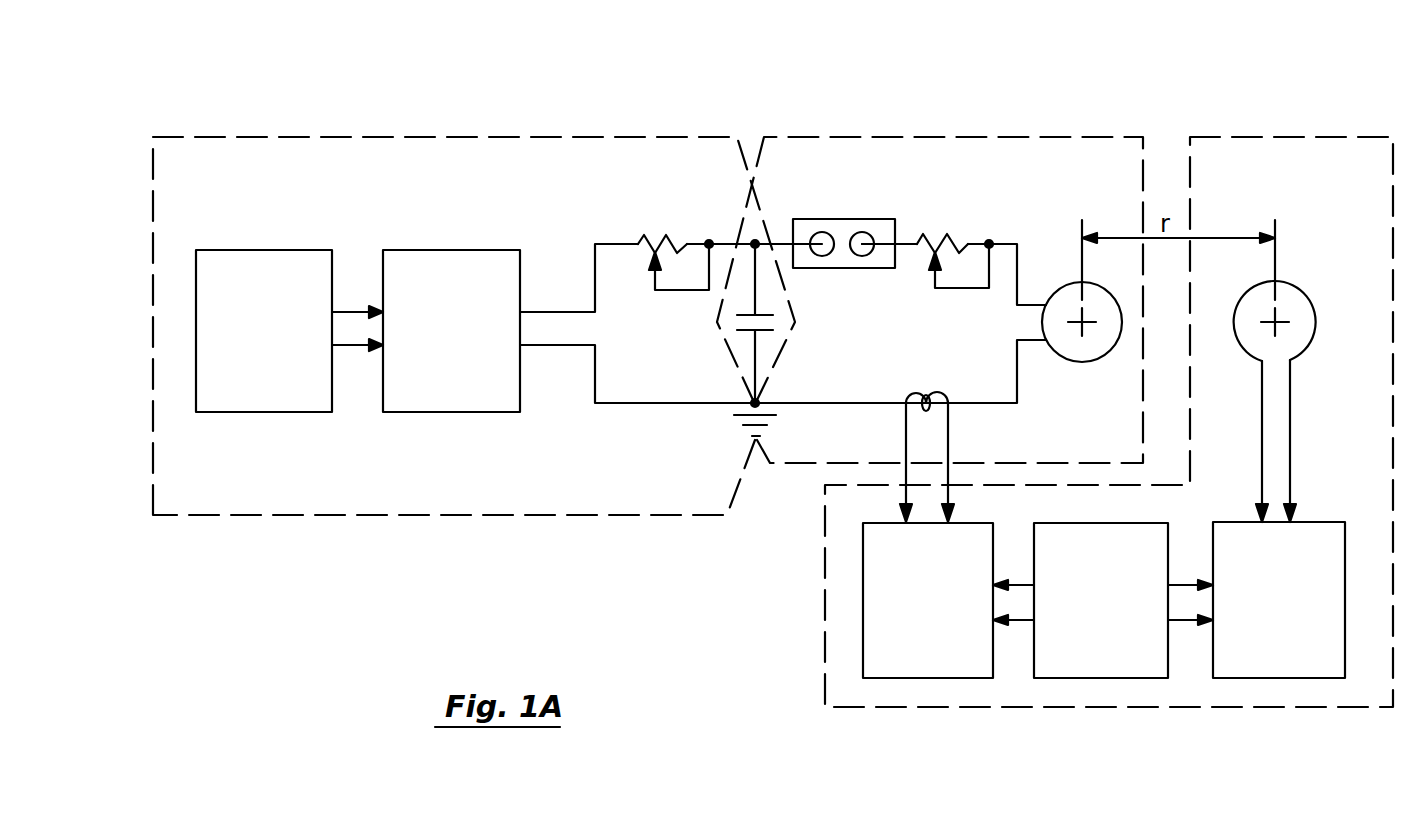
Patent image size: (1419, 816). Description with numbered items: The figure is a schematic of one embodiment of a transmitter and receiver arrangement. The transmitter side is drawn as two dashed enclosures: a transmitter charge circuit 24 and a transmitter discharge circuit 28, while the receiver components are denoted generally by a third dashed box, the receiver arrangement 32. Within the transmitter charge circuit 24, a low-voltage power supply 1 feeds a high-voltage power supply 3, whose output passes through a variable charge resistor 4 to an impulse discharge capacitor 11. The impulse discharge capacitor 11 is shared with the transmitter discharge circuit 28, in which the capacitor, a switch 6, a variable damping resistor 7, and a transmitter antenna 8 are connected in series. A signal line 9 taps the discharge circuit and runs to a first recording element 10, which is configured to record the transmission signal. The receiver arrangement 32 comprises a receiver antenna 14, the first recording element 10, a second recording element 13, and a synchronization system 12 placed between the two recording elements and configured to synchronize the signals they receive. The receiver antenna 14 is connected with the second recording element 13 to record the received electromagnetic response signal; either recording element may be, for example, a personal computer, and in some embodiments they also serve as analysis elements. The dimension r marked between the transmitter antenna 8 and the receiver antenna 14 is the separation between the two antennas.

The low-voltage power supply 1 is at (270, 250).
The high-voltage power supply 3 is at (450, 250).
The variable charge resistor 4 is at (650, 243).
The switch 6 is at (840, 219).
The variable damping resistor 7 is at (953, 240).
The transmitter antenna 8 is at (1052, 297).
The signal line 9 is at (933, 392).
The first recording element 10 is at (975, 523).
The impulse discharge capacitor 11 is at (768, 330).
The synchronization system 12 is at (1150, 523).
The second recording element 13 is at (1345, 542).
The receiver antenna 14 is at (1301, 291).
The transmitter charge circuit 24 is at (573, 137).
The transmitter discharge circuit 28 is at (987, 135).
The receiver arrangement 32 is at (1280, 135).